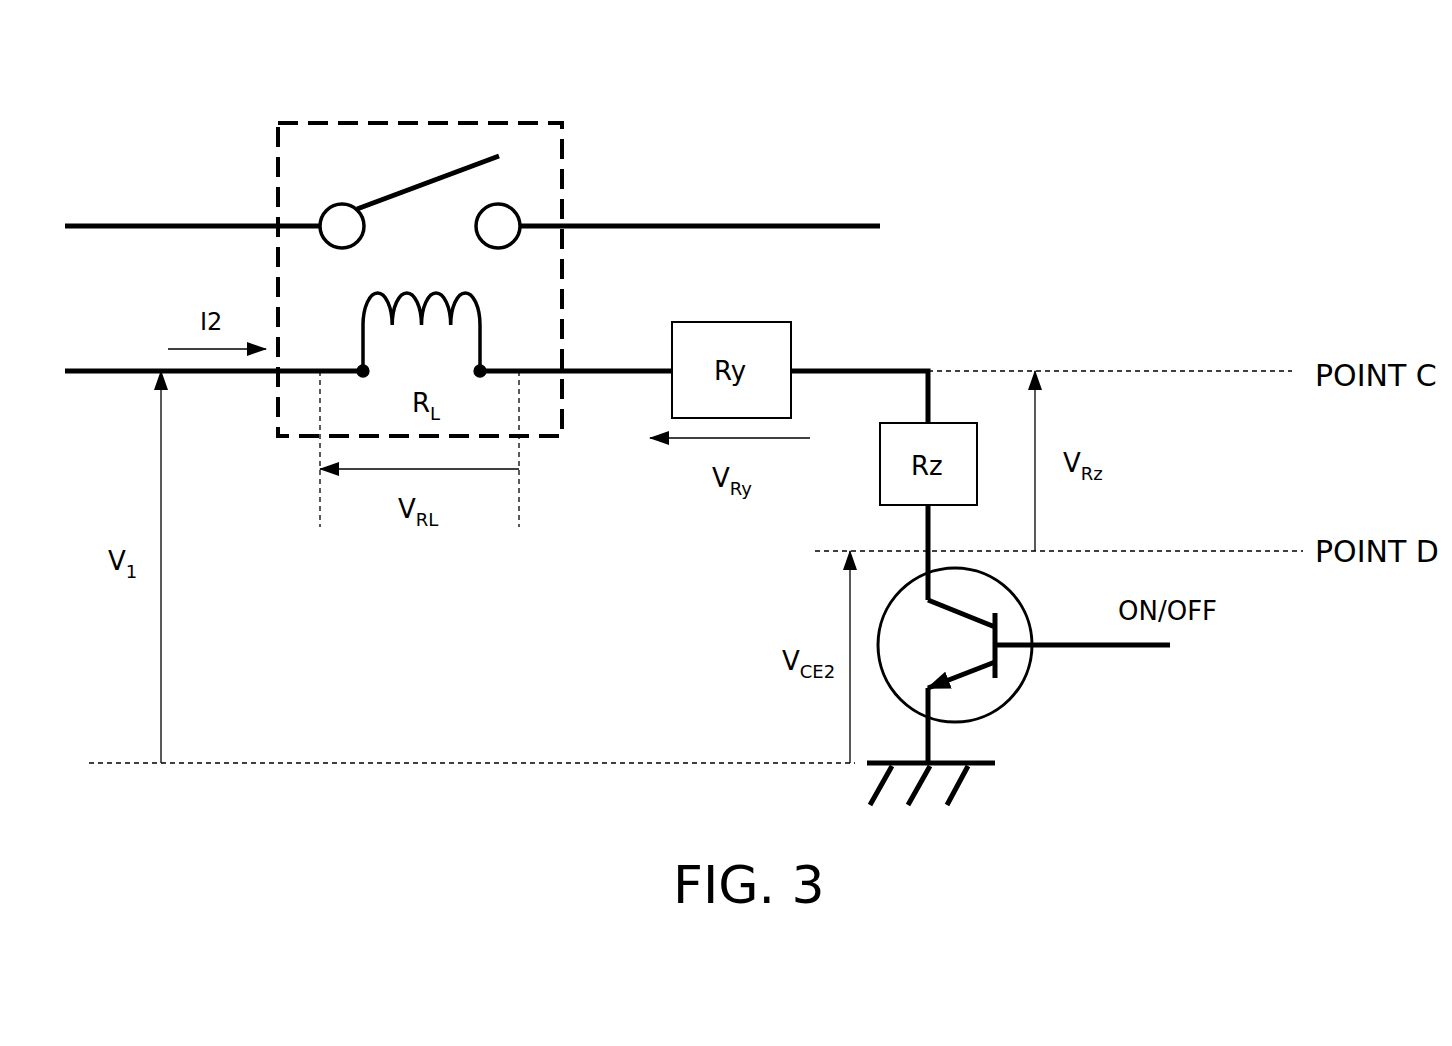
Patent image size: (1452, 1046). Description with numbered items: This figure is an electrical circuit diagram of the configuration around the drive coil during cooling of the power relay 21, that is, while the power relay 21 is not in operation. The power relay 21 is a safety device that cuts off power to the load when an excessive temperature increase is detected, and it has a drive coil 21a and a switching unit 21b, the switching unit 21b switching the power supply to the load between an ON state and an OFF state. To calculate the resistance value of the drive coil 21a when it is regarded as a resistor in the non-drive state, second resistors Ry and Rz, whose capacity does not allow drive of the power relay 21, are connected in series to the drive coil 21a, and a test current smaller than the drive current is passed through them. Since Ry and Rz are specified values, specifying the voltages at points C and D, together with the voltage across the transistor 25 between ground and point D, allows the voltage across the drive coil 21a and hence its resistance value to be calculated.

The power relay 21 is at (457, 123).
The drive coil 21a is at (502, 313).
The switching unit 21b is at (398, 187).
The transistor 25 is at (1022, 705).